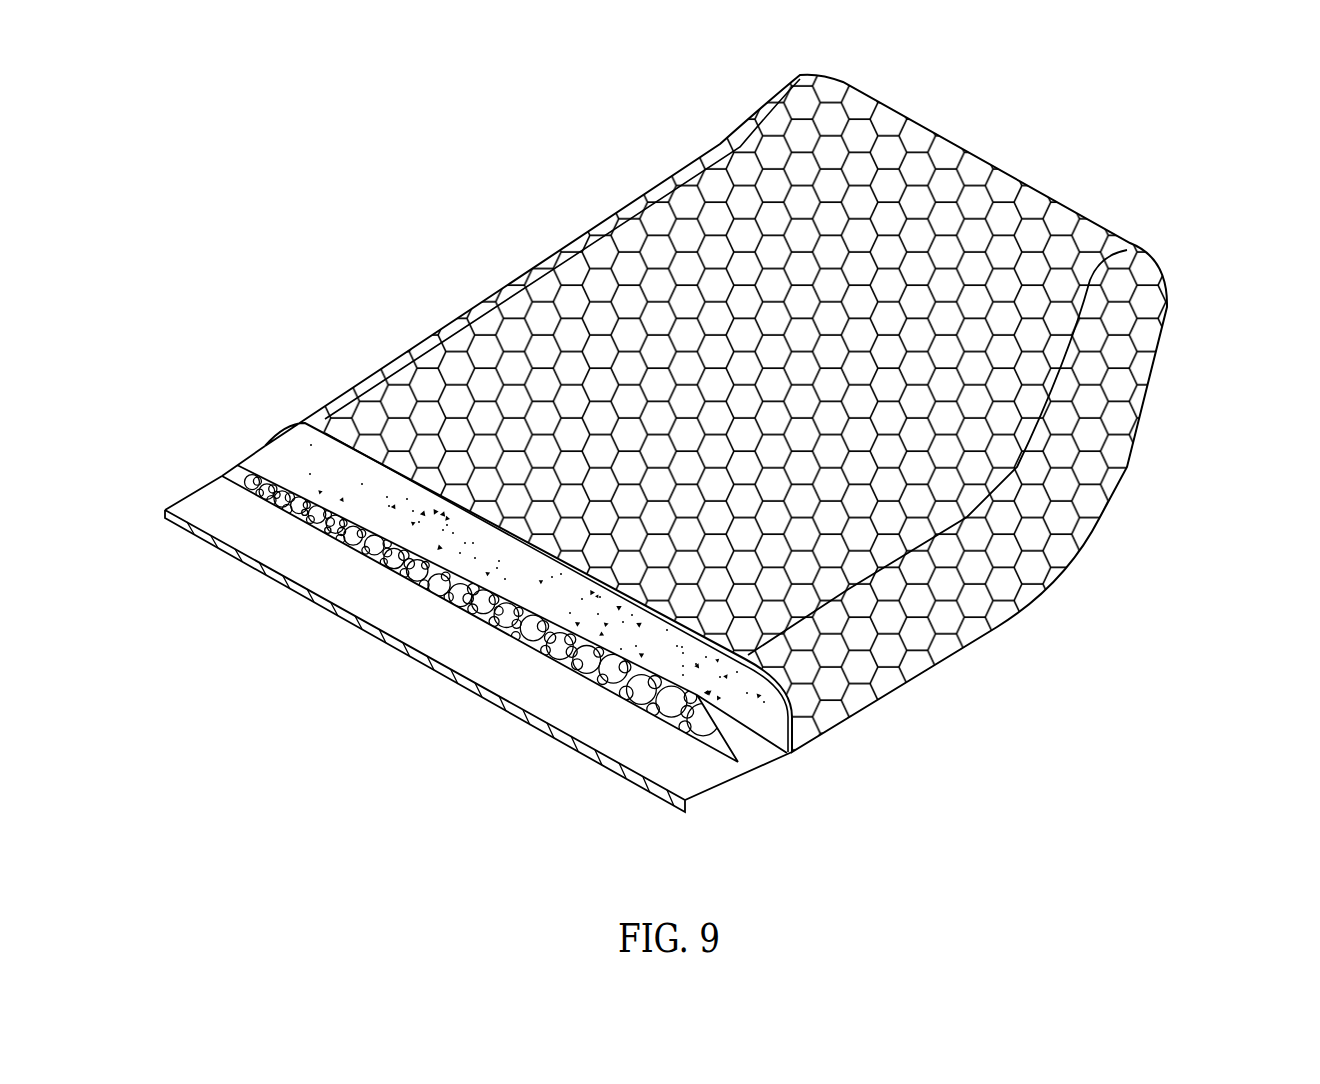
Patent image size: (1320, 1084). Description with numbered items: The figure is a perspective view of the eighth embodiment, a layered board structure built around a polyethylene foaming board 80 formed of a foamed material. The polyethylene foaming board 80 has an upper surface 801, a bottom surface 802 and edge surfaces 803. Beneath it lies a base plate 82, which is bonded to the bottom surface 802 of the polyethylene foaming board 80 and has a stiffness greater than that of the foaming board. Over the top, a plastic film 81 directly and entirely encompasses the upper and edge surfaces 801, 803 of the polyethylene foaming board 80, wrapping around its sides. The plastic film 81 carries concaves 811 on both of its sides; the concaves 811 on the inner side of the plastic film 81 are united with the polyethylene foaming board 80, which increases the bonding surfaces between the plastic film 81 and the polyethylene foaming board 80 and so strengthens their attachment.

The polyethylene foaming board 80 is at (491, 649).
The plastic film 81 is at (735, 413).
The concaves 811 is at (1127, 375).
The base plate 82 is at (418, 638).
The upper surface 801 is at (593, 623).
The bottom surface 802 is at (702, 750).
The edge surfaces 803 is at (763, 732).